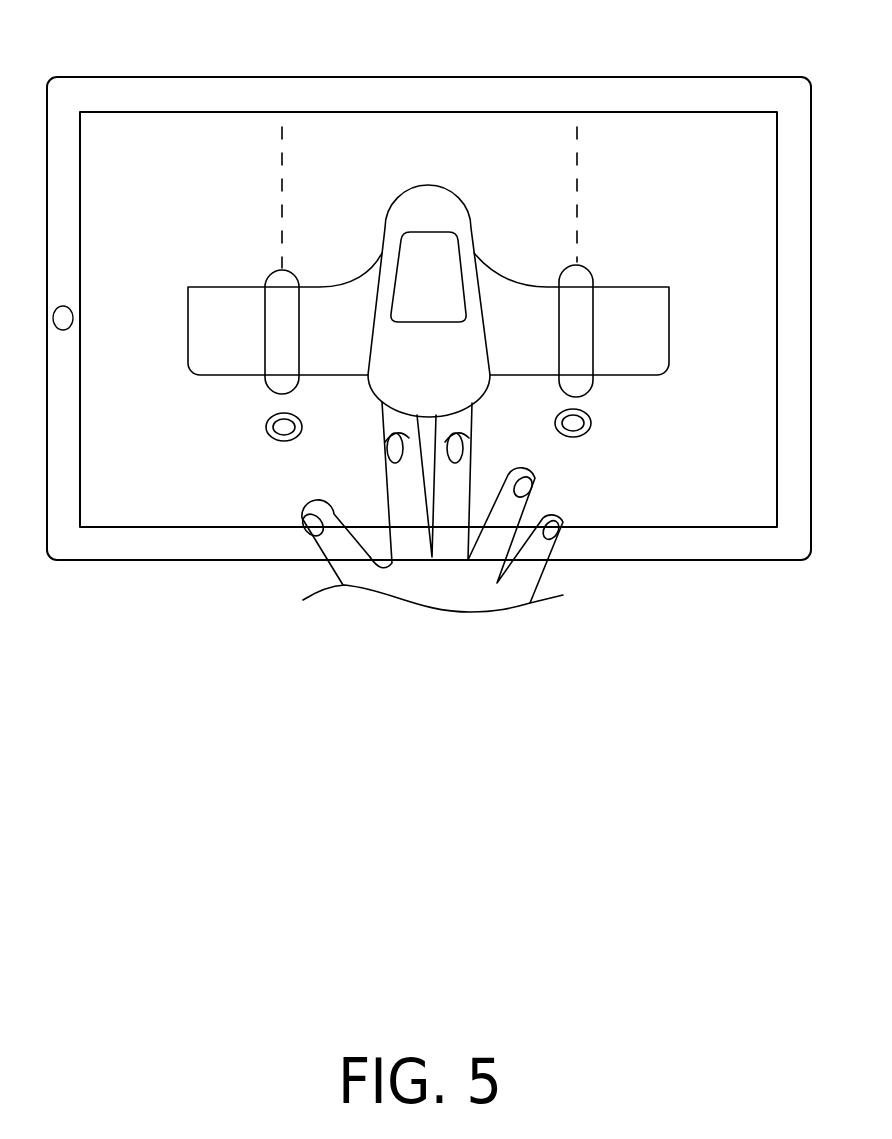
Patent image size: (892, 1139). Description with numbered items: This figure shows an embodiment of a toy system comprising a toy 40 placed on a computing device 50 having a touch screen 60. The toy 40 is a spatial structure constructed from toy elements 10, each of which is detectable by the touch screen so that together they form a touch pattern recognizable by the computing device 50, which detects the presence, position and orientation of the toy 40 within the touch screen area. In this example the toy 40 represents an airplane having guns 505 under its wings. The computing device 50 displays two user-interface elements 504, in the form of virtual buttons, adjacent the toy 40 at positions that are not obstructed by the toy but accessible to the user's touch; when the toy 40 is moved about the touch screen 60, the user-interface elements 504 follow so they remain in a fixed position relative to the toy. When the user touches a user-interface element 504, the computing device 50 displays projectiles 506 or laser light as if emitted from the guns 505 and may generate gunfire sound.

The toy elements 10 is at (380, 413).
The toy 40 is at (432, 182).
The computing device 50 is at (123, 540).
The touch screen 60 is at (173, 128).
The user-interface elements 504 is at (262, 427).
The guns 505 is at (263, 327).
The projectiles 506 is at (282, 195).